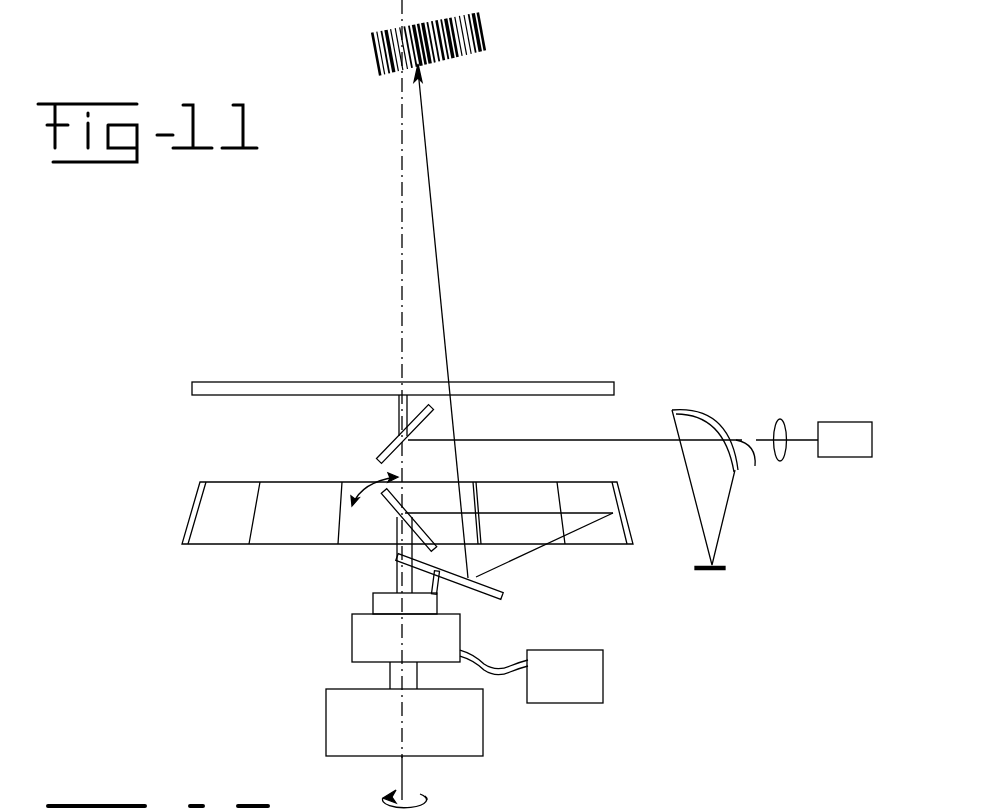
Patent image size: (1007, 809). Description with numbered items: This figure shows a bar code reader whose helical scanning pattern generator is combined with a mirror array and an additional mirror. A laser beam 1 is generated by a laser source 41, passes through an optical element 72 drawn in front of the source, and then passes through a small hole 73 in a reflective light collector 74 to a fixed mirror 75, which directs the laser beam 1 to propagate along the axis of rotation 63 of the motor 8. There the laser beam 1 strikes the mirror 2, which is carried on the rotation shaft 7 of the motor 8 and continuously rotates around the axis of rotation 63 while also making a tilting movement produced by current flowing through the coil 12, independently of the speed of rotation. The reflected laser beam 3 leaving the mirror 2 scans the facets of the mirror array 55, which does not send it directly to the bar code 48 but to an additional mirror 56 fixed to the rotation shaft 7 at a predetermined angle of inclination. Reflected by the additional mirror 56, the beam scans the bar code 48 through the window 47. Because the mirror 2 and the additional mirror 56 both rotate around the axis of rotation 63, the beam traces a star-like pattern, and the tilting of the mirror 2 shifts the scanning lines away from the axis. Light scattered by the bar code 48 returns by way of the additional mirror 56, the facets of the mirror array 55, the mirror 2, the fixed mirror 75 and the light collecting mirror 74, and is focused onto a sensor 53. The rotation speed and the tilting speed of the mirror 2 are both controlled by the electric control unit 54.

The laser beam 1 is at (620, 440).
The mirror 2 is at (388, 516).
The reflected laser beam 3 is at (489, 508).
The rotation shaft 7 is at (396, 579).
The motor 8 is at (476, 738).
The coil 12 is at (360, 646).
The laser source 41 is at (844, 432).
The window 47 is at (220, 384).
The bar code 48 is at (482, 21).
The sensor 53 is at (716, 572).
The electric control unit 54 is at (612, 678).
The mirror array 55 is at (628, 526).
The additional mirror 56 is at (502, 588).
The axis of rotation 63 is at (402, 185).
The lens 72 is at (780, 420).
The small hole 73 is at (755, 466).
The reflective light collector 74 is at (700, 414).
The fixed mirror 75 is at (386, 460).